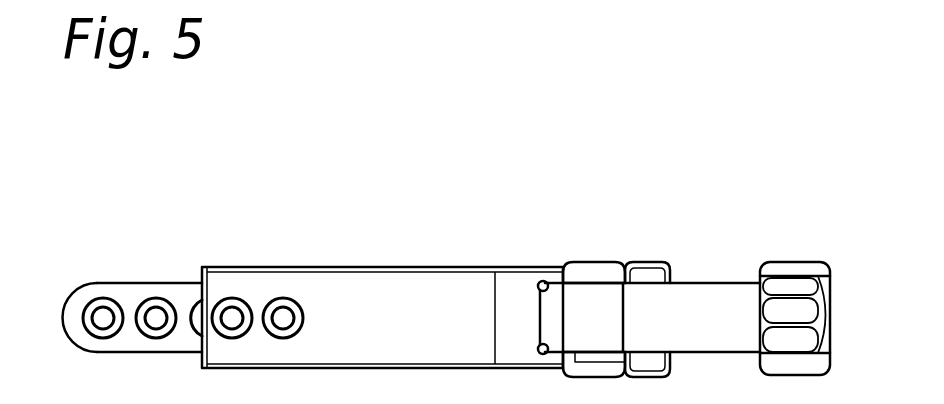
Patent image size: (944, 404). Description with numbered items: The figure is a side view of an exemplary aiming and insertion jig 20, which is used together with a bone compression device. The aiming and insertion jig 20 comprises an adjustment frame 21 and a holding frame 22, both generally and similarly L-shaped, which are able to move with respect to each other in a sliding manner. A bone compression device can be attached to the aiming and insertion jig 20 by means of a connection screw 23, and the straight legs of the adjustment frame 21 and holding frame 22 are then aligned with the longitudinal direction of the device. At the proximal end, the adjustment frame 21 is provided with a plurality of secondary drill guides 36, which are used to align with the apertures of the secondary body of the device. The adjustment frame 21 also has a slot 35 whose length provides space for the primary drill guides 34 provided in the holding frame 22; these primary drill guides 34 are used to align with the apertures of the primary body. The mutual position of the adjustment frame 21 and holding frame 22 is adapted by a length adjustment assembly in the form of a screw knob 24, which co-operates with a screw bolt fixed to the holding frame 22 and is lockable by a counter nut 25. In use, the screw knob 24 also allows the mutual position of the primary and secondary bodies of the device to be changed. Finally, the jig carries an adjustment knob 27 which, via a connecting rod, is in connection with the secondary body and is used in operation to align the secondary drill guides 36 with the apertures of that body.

The aiming and insertion jig 20 is at (75, 233).
The adjustment frame 21 is at (560, 297).
The holding frame 22 is at (448, 285).
The connection screw 23 is at (600, 273).
The screw knob 24 is at (818, 322).
The counter nut 25 is at (652, 274).
The adjustment knob 27 is at (808, 266).
The primary drill guides 34 is at (283, 316).
The slot 35 is at (198, 313).
The secondary drill guides 36 is at (155, 316).